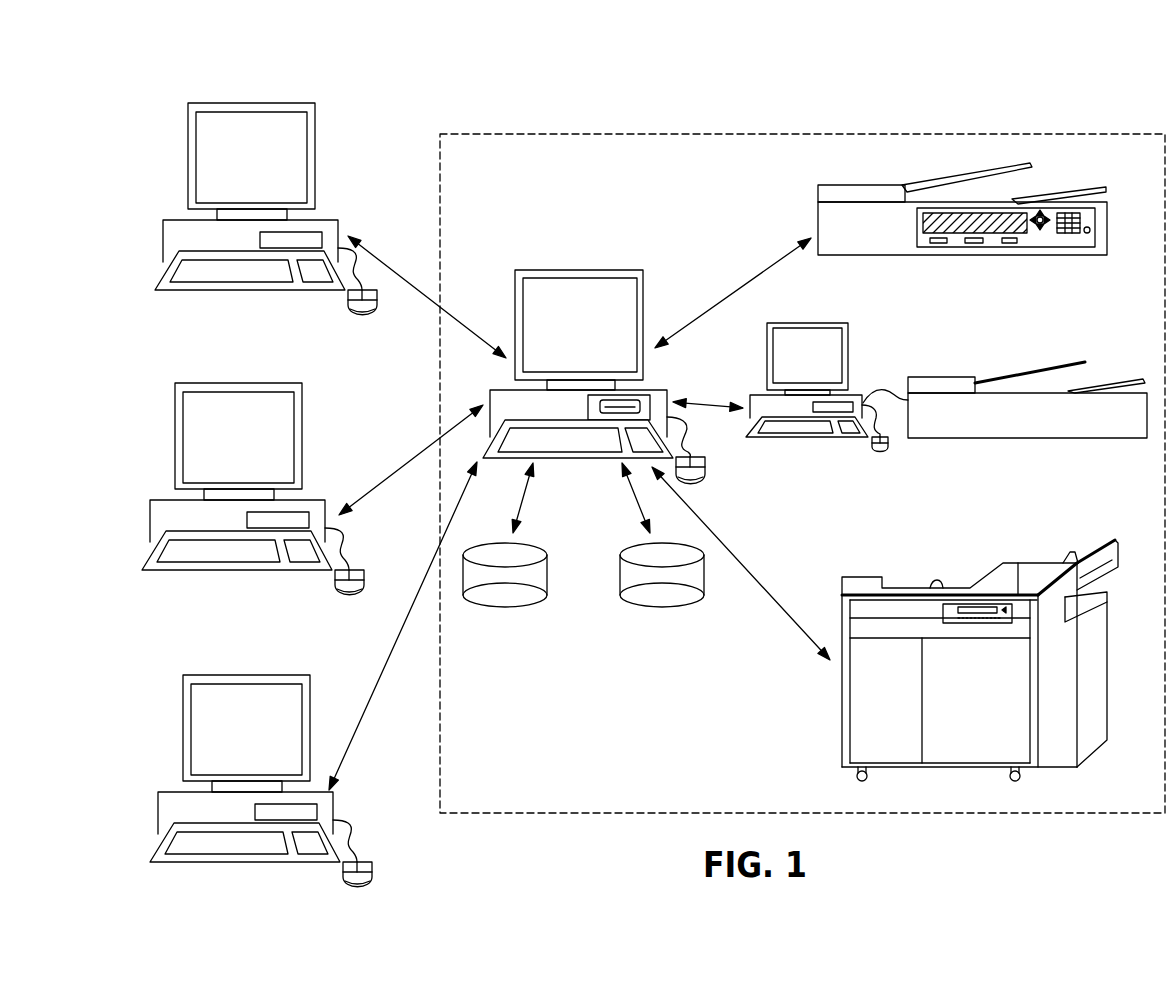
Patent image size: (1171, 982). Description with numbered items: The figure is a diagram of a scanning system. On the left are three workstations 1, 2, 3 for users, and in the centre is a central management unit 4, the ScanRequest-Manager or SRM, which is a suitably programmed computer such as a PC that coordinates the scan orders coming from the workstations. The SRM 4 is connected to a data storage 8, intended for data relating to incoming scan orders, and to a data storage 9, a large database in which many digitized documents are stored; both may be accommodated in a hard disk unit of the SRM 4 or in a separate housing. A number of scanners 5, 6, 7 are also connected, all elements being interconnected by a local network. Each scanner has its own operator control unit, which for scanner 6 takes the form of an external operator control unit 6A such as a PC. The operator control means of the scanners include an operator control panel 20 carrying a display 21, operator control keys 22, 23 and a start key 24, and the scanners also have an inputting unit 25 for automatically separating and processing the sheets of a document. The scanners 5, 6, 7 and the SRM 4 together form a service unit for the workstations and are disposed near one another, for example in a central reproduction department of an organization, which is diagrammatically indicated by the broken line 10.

The workstation 1 is at (188, 178).
The workstation 2 is at (175, 420).
The workstation 3 is at (183, 770).
The central management unit 4 is at (612, 270).
The scanner 5 is at (818, 213).
The scanner 6 is at (934, 377).
The external operator control unit 6A is at (848, 353).
The scanner 7 is at (858, 577).
The data storage 8 is at (490, 607).
The data storage 9 is at (645, 607).
The broken line 10 is at (512, 814).
The operator control panel 20 is at (917, 228).
The display 21 is at (955, 240).
The operator control key 22 is at (1036, 230).
The operator control key 23 is at (1008, 243).
The start key 24 is at (1090, 230).
The inputting unit 25 is at (905, 185).